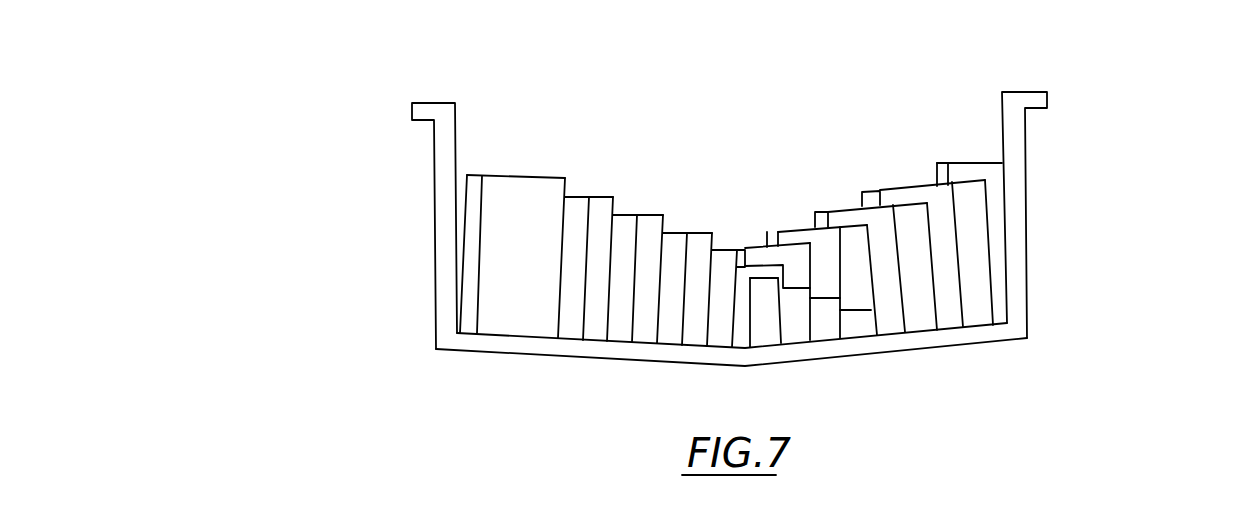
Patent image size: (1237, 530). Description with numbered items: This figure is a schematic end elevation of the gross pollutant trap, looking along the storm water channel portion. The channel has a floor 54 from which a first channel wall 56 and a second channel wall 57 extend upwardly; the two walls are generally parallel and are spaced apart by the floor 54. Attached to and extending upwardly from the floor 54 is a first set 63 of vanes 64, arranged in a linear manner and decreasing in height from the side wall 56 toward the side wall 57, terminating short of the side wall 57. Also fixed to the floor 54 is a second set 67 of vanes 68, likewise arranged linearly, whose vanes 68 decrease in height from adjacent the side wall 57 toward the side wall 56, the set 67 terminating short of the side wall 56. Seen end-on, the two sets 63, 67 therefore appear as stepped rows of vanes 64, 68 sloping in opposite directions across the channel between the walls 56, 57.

The floor 54 is at (840, 356).
The first channel wall 56 is at (425, 182).
The second channel wall 57 is at (1038, 180).
The first set of vanes 63 is at (656, 185).
The vanes 64 is at (630, 213).
The second set of vanes 67 is at (855, 187).
The vanes 68 is at (880, 237).